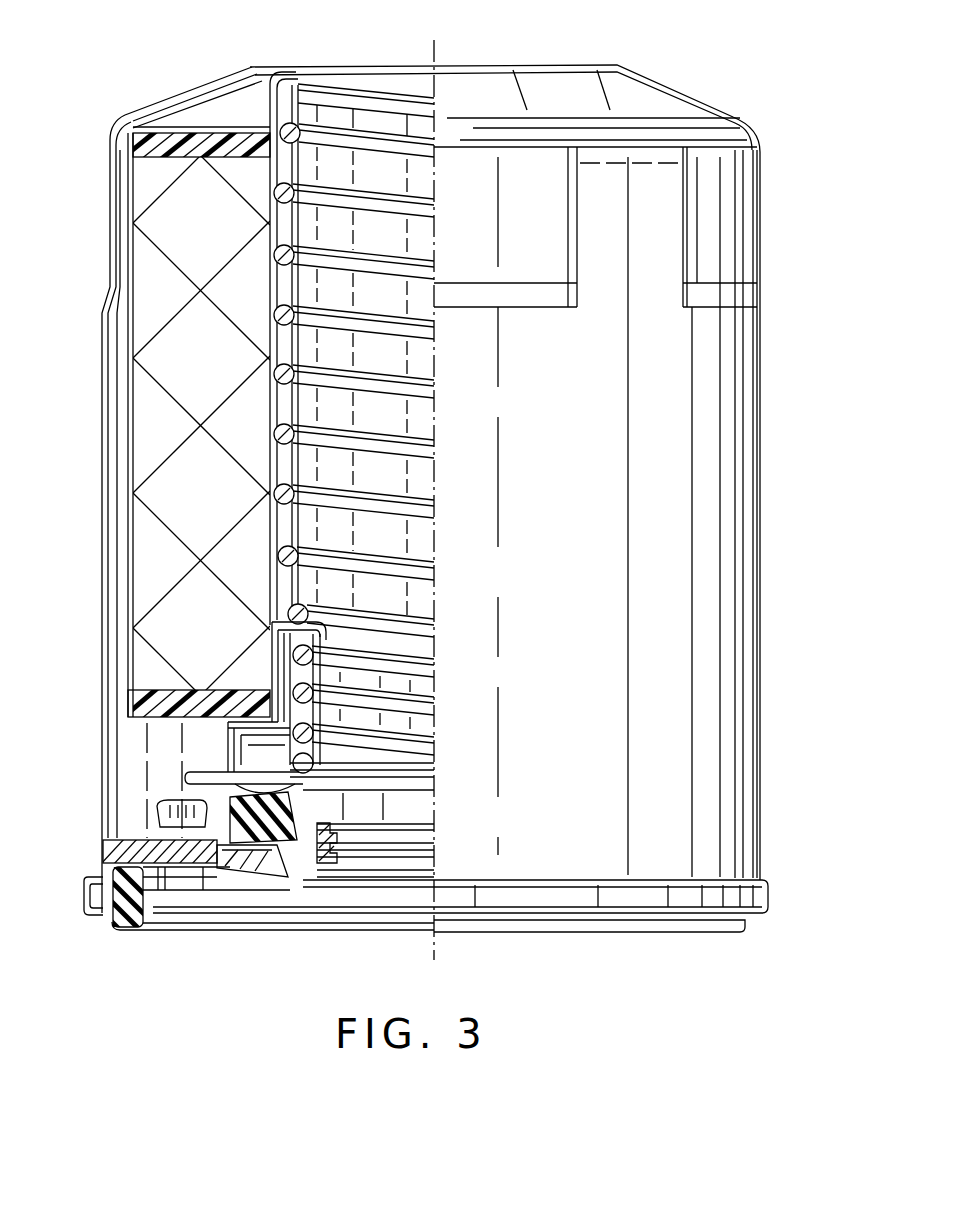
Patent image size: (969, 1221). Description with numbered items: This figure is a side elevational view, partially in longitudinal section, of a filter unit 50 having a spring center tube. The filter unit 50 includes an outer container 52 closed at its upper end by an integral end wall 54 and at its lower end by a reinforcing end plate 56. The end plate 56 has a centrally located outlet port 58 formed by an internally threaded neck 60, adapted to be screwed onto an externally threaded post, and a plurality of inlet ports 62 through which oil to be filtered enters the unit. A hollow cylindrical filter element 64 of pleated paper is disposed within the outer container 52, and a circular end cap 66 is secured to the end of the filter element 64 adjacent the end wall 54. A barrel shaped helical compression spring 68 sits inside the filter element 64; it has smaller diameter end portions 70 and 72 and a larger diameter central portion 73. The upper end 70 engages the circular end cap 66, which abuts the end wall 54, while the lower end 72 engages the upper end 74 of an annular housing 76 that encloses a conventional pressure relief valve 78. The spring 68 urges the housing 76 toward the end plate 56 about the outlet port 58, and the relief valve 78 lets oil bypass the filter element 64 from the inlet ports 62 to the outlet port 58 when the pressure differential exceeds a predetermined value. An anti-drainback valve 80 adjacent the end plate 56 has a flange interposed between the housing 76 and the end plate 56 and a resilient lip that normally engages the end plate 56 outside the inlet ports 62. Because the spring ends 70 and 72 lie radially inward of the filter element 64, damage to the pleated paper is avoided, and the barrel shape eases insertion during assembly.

The filter unit 50 is at (797, 124).
The outer container 52 is at (740, 405).
The end wall 54 is at (543, 67).
The end plate 56 is at (130, 848).
The outlet port 58 is at (402, 823).
The internally threaded neck 60 is at (345, 868).
The inlet ports 62 is at (229, 869).
The filter element 64 is at (153, 291).
The circular end cap 66 is at (268, 97).
The helical compression spring 68 is at (405, 288).
The upper end portion of spring 70 is at (399, 88).
The lower end portion of spring 72 is at (312, 606).
The central portion of spring 73 is at (274, 377).
The upper end of housing 74 is at (385, 625).
The housing 76 is at (273, 650).
The pressure relief valve 78 is at (447, 676).
The anti-drainback valve 80 is at (148, 804).